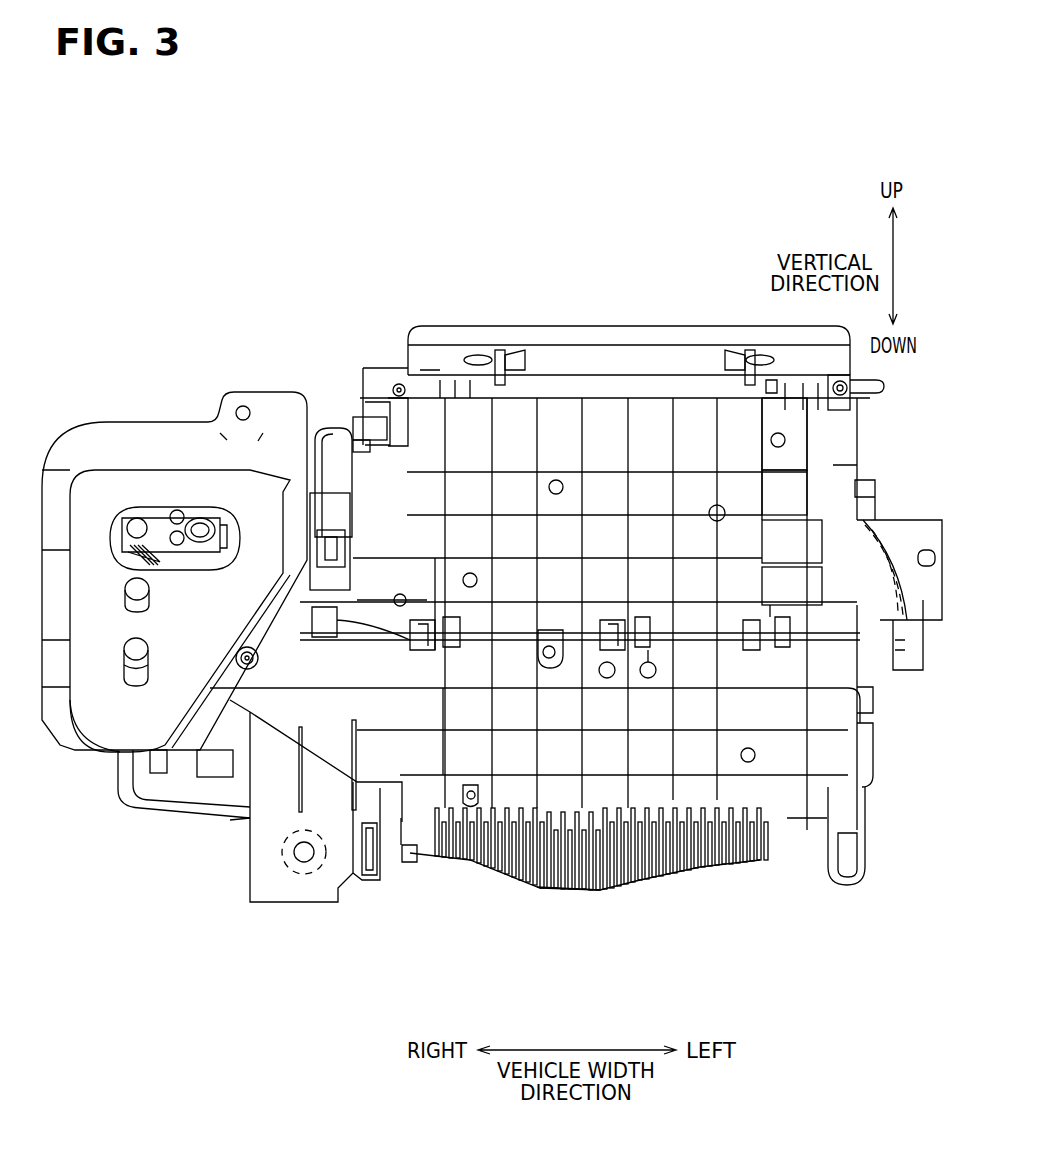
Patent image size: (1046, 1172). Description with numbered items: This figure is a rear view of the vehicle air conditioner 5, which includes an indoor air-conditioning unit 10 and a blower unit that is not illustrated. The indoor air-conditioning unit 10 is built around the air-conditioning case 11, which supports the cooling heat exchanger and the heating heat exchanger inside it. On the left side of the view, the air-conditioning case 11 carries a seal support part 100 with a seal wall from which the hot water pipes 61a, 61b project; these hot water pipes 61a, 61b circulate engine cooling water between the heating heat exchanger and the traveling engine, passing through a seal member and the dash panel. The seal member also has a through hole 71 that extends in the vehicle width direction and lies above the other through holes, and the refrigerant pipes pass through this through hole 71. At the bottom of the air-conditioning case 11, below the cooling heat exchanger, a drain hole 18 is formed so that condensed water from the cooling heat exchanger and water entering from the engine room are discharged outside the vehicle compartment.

The vehicle air conditioner 5 is at (353, 1057).
The indoor air-conditioning unit 10 is at (244, 945).
The air-conditioning case 11 is at (827, 707).
The drain hole 18 is at (528, 887).
The hot water pipe 61a is at (108, 598).
The hot water pipe 61b is at (141, 706).
The through hole 71 is at (107, 711).
The seal support part 100 is at (40, 678).